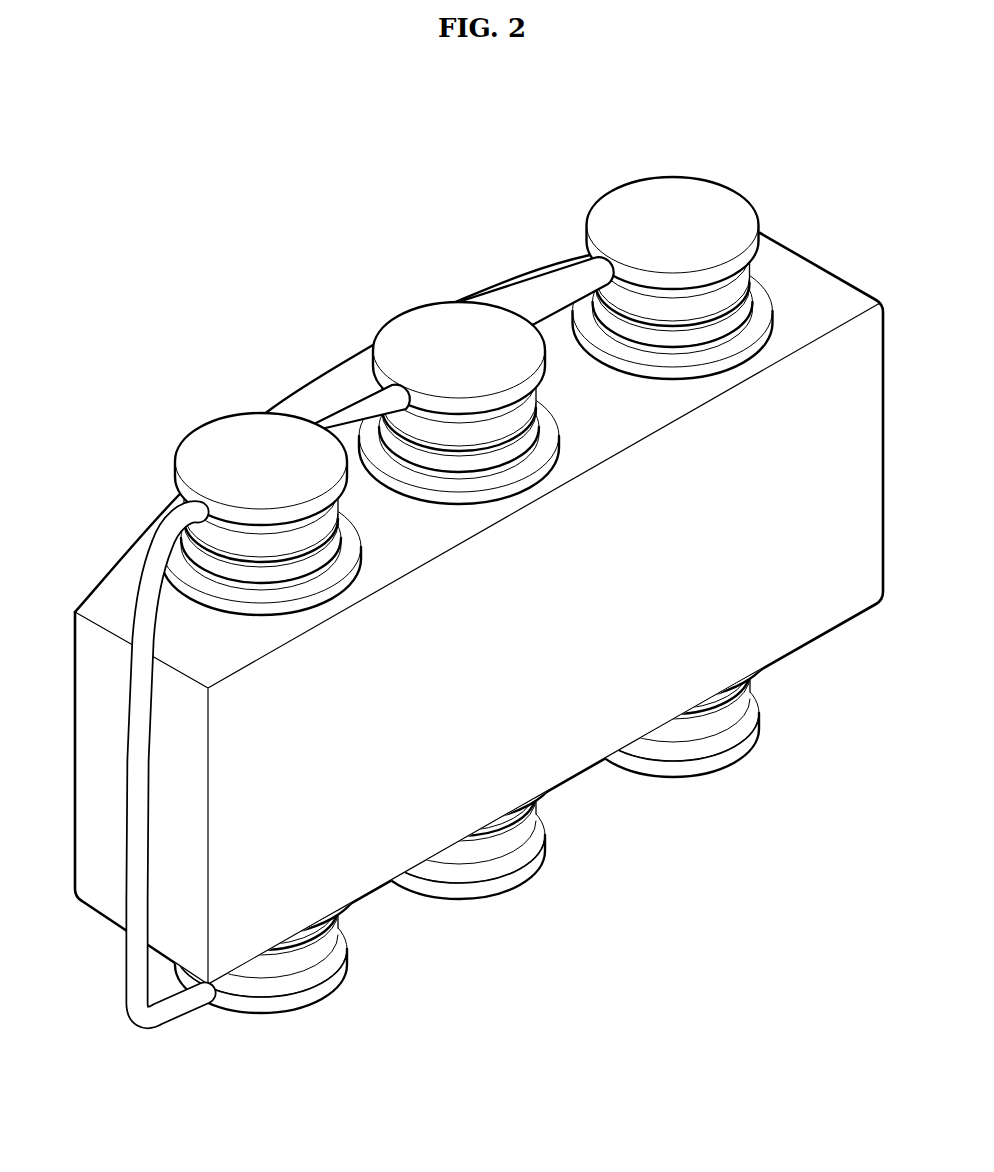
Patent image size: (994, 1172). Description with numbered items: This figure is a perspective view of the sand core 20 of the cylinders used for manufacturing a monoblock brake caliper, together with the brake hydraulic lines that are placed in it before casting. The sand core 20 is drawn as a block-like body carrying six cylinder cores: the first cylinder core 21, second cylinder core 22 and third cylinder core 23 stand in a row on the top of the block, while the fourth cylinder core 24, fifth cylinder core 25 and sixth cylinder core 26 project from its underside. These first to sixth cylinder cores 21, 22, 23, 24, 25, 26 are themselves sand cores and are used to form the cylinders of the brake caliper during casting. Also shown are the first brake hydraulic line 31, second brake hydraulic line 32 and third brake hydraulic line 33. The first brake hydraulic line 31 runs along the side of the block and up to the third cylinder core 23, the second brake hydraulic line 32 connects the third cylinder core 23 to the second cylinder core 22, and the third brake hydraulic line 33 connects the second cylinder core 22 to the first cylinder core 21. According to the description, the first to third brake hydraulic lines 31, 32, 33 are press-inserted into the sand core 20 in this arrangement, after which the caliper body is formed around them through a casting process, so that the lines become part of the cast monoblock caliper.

The sand core 20 is at (799, 205).
The first cylinder core 21 is at (668, 190).
The second cylinder core 22 is at (413, 325).
The third cylinder core 23 is at (223, 435).
The fourth cylinder core 24 is at (698, 780).
The fifth cylinder core 25 is at (483, 900).
The sixth cylinder core 26 is at (290, 1012).
The first brake hydraulic line 31 is at (137, 992).
The second brake hydraulic line 32 is at (352, 402).
The third brake hydraulic line 33 is at (553, 300).